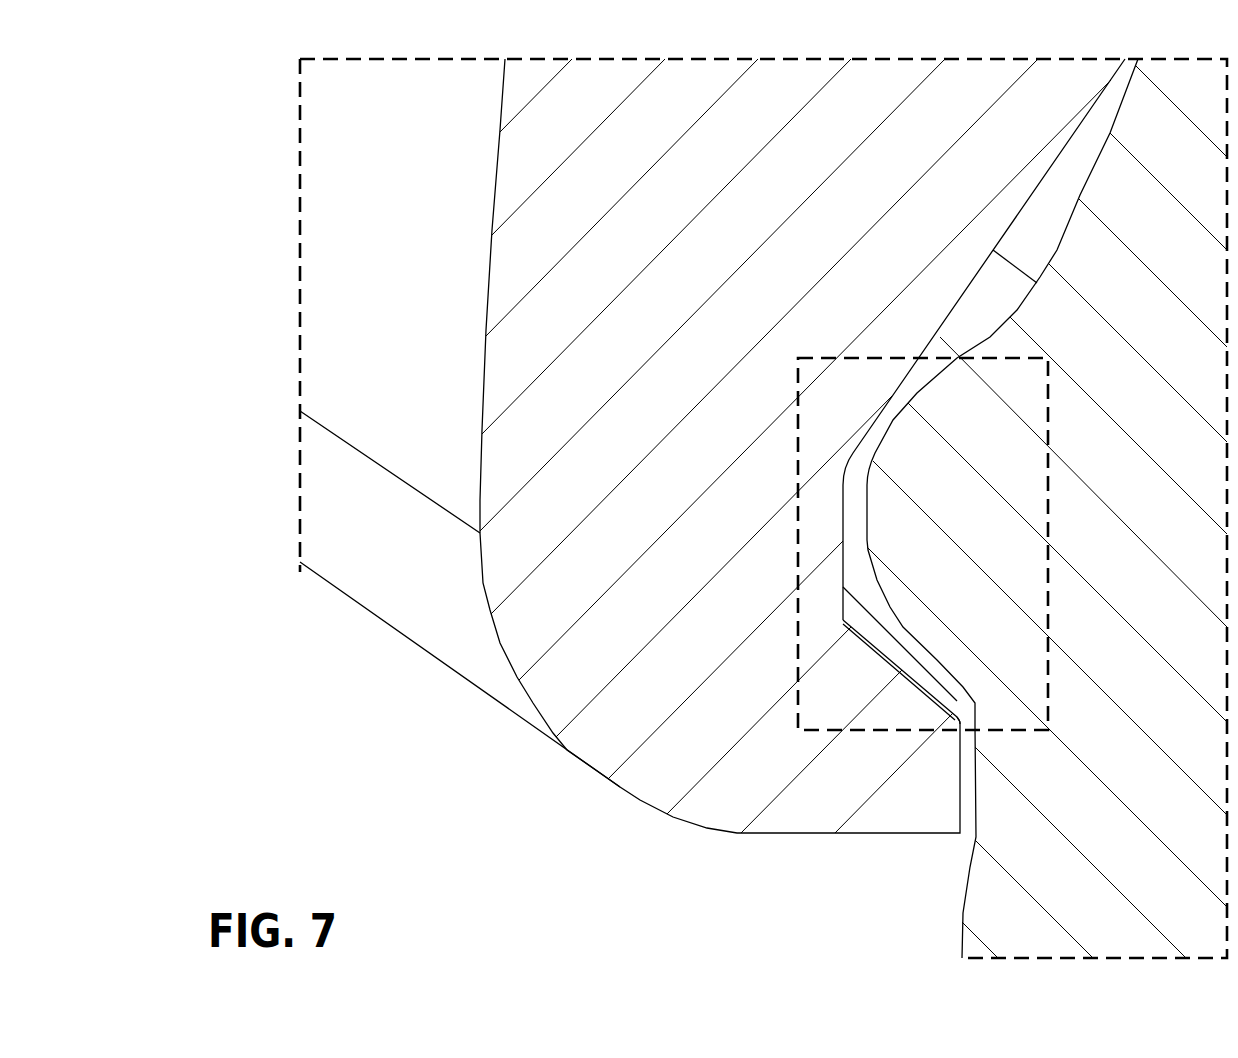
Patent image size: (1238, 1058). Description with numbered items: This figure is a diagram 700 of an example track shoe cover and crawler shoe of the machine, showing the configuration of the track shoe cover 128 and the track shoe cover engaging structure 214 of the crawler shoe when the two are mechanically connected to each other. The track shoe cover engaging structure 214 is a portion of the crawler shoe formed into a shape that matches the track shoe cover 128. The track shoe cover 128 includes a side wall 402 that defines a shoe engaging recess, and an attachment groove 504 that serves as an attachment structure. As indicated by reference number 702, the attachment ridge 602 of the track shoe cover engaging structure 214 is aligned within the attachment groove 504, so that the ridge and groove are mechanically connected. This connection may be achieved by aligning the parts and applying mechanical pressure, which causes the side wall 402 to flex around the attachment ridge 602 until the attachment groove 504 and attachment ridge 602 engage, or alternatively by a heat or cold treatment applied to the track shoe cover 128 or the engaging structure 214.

The diagram 700 is at (254, 64).
The track shoe cover 128 is at (812, 159).
The track shoe cover engaging structure 214 is at (1183, 247).
The side wall 402 is at (300, 410).
The attachment groove 504 is at (845, 553).
The attachment ridge 602 is at (868, 540).
The mechanical connection of attachment ridge and attachment groove 702 is at (800, 640).